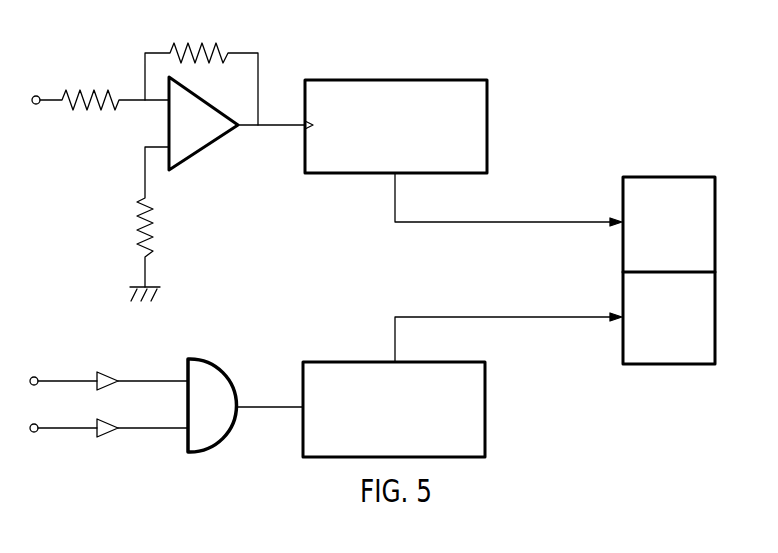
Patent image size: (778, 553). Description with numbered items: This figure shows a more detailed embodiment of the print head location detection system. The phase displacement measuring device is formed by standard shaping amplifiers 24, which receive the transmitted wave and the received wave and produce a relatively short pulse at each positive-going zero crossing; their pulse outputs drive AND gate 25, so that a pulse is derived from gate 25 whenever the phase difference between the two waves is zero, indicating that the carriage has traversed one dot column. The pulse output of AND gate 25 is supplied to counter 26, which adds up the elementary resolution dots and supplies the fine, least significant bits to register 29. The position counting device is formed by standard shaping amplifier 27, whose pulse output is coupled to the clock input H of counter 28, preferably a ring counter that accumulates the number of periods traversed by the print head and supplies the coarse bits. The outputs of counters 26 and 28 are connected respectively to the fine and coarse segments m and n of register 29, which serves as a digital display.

The shaping amplifiers 24 is at (98, 388).
The AND gate 25 is at (188, 408).
The counter 26 is at (485, 381).
The shaping amplifier 27 is at (190, 160).
The counter 28 is at (395, 80).
The register 29 is at (623, 272).